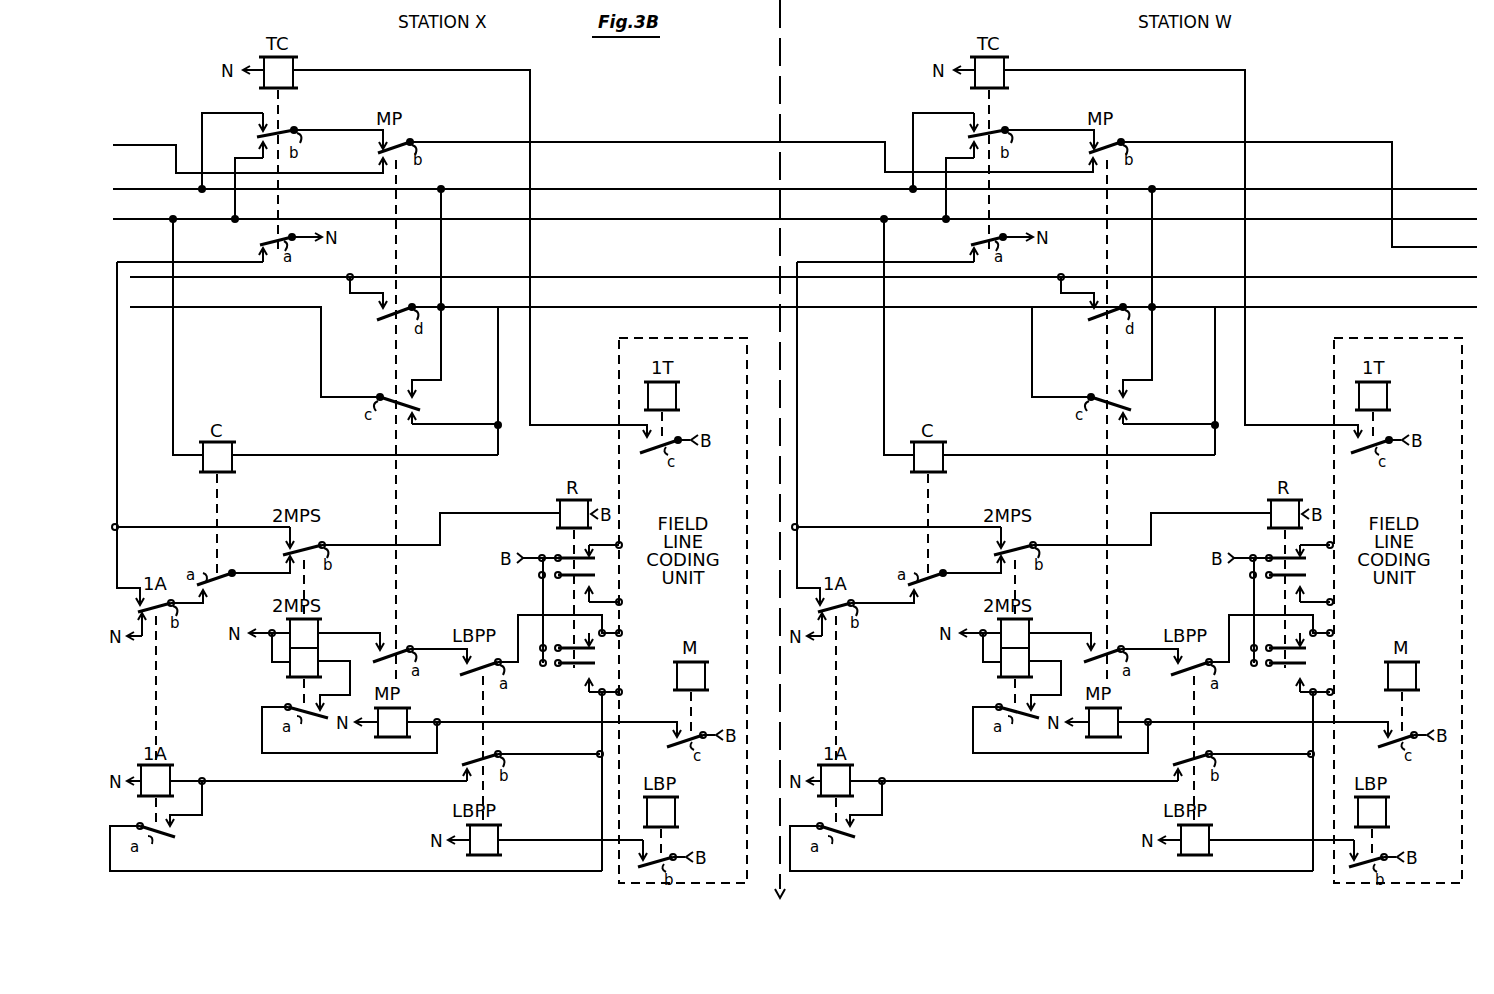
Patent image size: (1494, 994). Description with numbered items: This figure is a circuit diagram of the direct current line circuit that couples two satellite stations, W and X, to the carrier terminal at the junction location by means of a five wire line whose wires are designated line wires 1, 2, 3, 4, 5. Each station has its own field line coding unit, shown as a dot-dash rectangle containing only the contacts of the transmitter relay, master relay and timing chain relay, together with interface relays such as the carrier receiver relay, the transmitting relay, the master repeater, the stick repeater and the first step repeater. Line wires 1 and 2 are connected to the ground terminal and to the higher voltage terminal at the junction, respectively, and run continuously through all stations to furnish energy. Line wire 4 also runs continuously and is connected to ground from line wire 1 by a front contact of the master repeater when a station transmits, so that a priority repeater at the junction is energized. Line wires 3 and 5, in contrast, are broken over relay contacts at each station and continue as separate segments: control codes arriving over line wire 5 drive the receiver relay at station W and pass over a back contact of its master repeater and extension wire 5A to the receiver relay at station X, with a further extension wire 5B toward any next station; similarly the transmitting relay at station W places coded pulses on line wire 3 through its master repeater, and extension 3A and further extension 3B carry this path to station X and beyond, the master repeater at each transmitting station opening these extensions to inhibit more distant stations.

The line wire 1 is at (1429, 189).
The line wire 2 is at (1429, 219).
The line wire 3 is at (1429, 248).
The line wire 4 is at (1429, 276).
The line wire 5 is at (1429, 306).
The line wire extension 3A is at (683, 140).
The line wire extension 3B is at (155, 140).
The extension wire 5A is at (678, 302).
The extension wire 5B is at (253, 302).